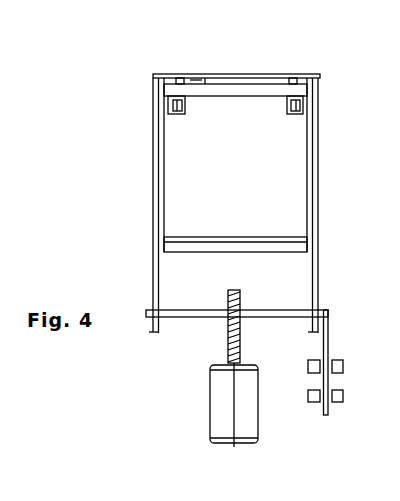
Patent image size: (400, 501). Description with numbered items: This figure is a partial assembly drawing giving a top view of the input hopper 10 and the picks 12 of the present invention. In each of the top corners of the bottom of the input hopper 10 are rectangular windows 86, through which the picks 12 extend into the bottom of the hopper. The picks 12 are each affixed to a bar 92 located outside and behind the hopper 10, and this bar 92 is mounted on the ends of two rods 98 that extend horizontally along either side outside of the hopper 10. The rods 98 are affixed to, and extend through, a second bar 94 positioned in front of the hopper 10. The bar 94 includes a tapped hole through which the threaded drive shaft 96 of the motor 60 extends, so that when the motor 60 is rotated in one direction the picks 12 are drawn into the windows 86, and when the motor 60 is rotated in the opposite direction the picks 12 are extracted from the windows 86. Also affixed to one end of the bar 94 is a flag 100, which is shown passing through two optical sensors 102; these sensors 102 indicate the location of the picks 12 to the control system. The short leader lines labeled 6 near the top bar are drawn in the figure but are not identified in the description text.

The guide 6 is at (205, 75).
The input hopper 10 is at (180, 230).
The pick 12 is at (177, 99).
The motor 60 is at (222, 430).
The rectangular window 86 is at (172, 114).
The bar 92 is at (275, 74).
The second bar 94 is at (205, 317).
The threaded drive shaft 96 is at (228, 343).
The rod 98 is at (153, 285).
The flag 100 is at (328, 333).
The optical sensor 102 is at (307, 395).